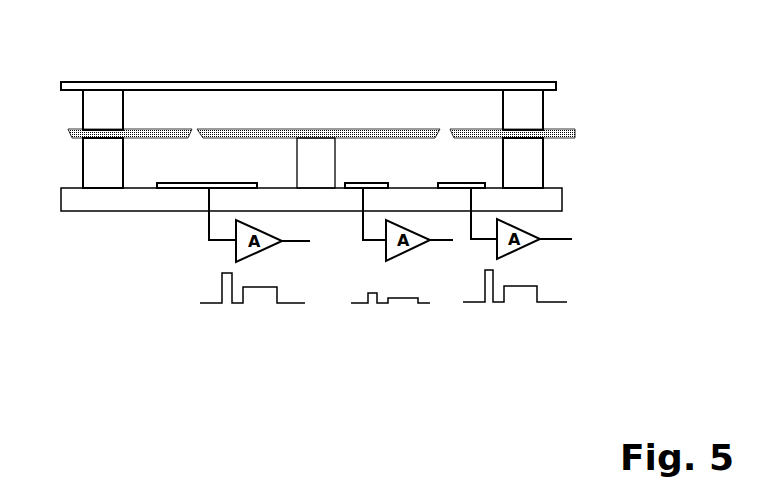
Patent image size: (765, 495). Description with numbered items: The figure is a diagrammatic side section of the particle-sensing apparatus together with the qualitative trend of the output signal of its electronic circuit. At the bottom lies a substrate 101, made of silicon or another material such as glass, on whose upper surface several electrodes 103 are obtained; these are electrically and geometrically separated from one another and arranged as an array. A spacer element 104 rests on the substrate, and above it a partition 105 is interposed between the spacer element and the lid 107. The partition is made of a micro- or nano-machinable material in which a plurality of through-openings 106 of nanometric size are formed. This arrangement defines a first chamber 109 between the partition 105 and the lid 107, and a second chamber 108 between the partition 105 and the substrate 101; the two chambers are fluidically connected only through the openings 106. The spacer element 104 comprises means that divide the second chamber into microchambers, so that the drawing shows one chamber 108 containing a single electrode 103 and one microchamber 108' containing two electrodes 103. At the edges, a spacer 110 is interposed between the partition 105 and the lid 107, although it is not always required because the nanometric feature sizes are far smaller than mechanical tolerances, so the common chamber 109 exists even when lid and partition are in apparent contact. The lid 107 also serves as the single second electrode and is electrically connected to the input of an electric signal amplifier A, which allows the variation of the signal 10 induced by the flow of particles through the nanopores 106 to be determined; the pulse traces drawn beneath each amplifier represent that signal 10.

The signal 10 is at (471, 287).
The substrate 101 is at (136, 212).
The electrodes 103 is at (438, 185).
The spacer element 104 is at (82, 164).
The partition 105 is at (67, 132).
The through-openings 106 is at (440, 130).
The lid 107 is at (178, 80).
The second chamber 108 is at (111, 156).
The microchamber 108' is at (499, 158).
The first chamber 109 is at (418, 112).
The spacer 110 is at (80, 110).